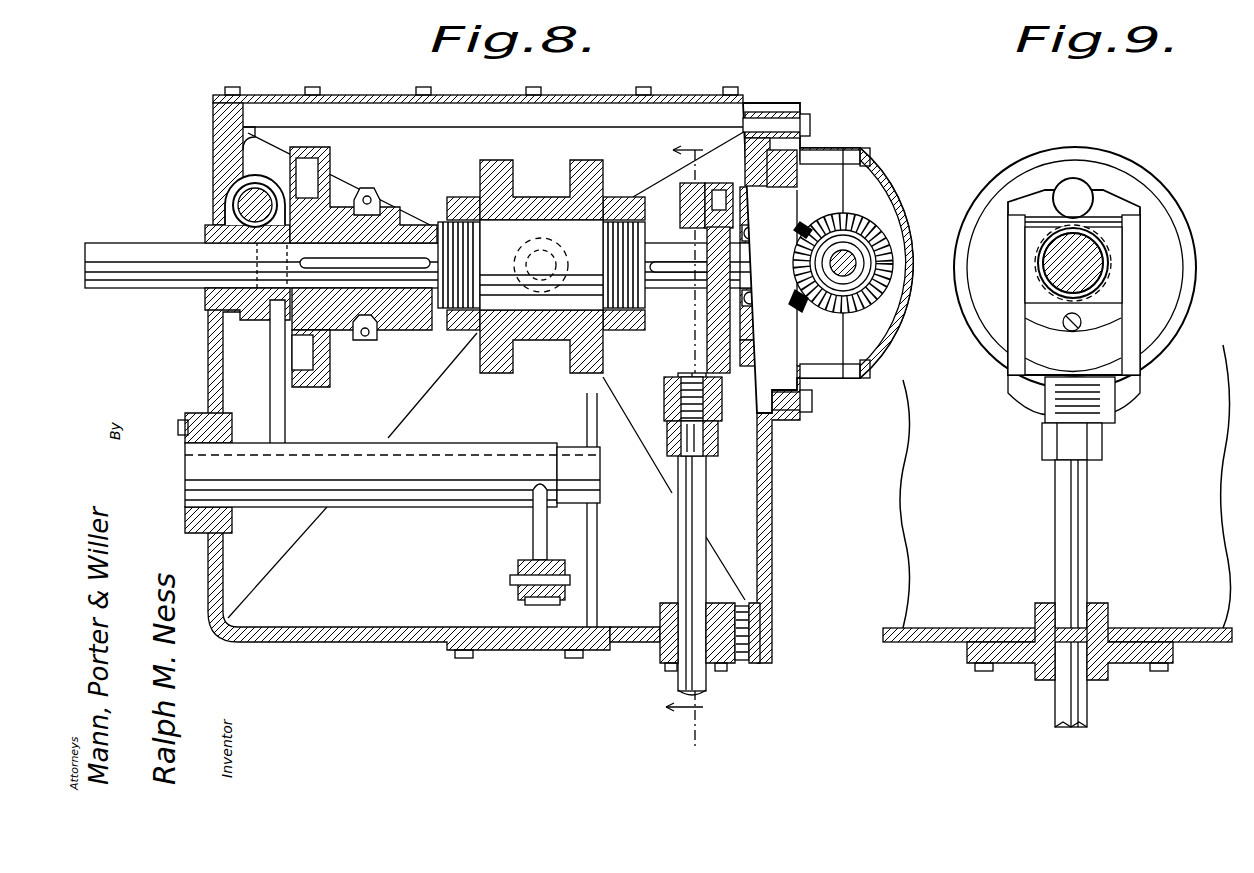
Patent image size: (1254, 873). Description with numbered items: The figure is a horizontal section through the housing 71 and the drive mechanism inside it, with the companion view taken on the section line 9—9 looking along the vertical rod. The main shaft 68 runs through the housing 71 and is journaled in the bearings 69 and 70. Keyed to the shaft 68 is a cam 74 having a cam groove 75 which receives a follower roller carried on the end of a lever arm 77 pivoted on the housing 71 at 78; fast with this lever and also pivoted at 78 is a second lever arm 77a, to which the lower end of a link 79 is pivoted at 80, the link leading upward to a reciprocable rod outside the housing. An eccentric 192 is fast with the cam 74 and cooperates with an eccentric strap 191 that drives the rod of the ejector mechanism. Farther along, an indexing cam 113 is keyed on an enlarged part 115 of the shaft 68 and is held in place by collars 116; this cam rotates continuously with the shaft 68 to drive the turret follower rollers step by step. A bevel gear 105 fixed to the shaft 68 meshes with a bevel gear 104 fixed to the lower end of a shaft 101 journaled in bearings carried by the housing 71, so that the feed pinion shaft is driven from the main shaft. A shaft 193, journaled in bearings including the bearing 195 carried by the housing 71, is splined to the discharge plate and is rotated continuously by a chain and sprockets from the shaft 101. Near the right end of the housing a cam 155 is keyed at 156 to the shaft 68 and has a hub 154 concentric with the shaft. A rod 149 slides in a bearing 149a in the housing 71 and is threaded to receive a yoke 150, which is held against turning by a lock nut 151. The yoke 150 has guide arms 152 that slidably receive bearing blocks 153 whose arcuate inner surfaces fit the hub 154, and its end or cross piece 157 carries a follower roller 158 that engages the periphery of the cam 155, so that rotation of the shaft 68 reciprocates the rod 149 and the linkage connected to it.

In FIG. 8, the housing 71 is at (252, 97).
In FIG. 9, the housing 71 is at (930, 630).
In FIG. 8, the shaft 68 is at (200, 246).
In FIG. 8, the bearing 69 is at (240, 296).
In FIG. 8, the cam 74 is at (322, 153).
In FIG. 9, the cam 74 is at (1123, 200).
In FIG. 8, the cam groove 75 is at (310, 388).
In FIG. 8, the lever arm 77 is at (268, 345).
In FIG. 8, the lever arm 77a is at (533, 530).
In FIG. 8, the pivot 78 is at (215, 470).
In FIG. 8, the link 79 is at (540, 605).
In FIG. 8, the pivot 80 is at (515, 583).
In FIG. 8, the section line 9— 9 is at (684, 453).
In FIG. 8, the bearing 70 is at (800, 170).
In FIG. 8, the shaft 101 is at (852, 256).
In FIG. 8, the bevel gear 104 is at (862, 240).
In FIG. 8, the bevel gear 105 is at (803, 222).
In FIG. 8, the indexing cam 113 is at (492, 160).
In FIG. 9, the indexing cam 113 is at (1020, 180).
In FIG. 8, the enlarged part of the shaft 115 is at (540, 225).
In FIG. 8, the collars 116 is at (462, 220).
In FIG. 8, the rod 149 is at (707, 702).
In FIG. 9, the rod 149 is at (1080, 546).
In FIG. 8, the bearing 149a is at (662, 665).
In FIG. 9, the bearing 149a is at (1095, 680).
In FIG. 8, the yoke 150 is at (666, 390).
In FIG. 9, the yoke 150 is at (1120, 385).
In FIG. 8, the lock nut 151 is at (672, 440).
In FIG. 9, the lock nut 151 is at (1102, 440).
In FIG. 8, the guide arms 152 is at (705, 350).
In FIG. 9, the guide arms 152 is at (1118, 340).
In FIG. 9, the bearing blocks 153 is at (1108, 255).
In FIG. 8, the hub 154 is at (763, 263).
In FIG. 9, the hub 154 is at (1105, 245).
In FIG. 8, the cam 155 is at (814, 403).
In FIG. 8, the key 156 is at (690, 257).
In FIG. 8, the cross piece of the yoke 157 is at (688, 185).
In FIG. 9, the cross piece of the yoke 157 is at (1100, 195).
In FIG. 8, the follower roller 158 is at (730, 175).
In FIG. 9, the follower roller 158 is at (1073, 197).
In FIG. 8, the eccentric strap 191 is at (378, 335).
In FIG. 8, the eccentric 192 is at (370, 195).
In FIG. 8, the shaft 193 is at (250, 207).
In FIG. 8, the bearing 195 is at (240, 190).